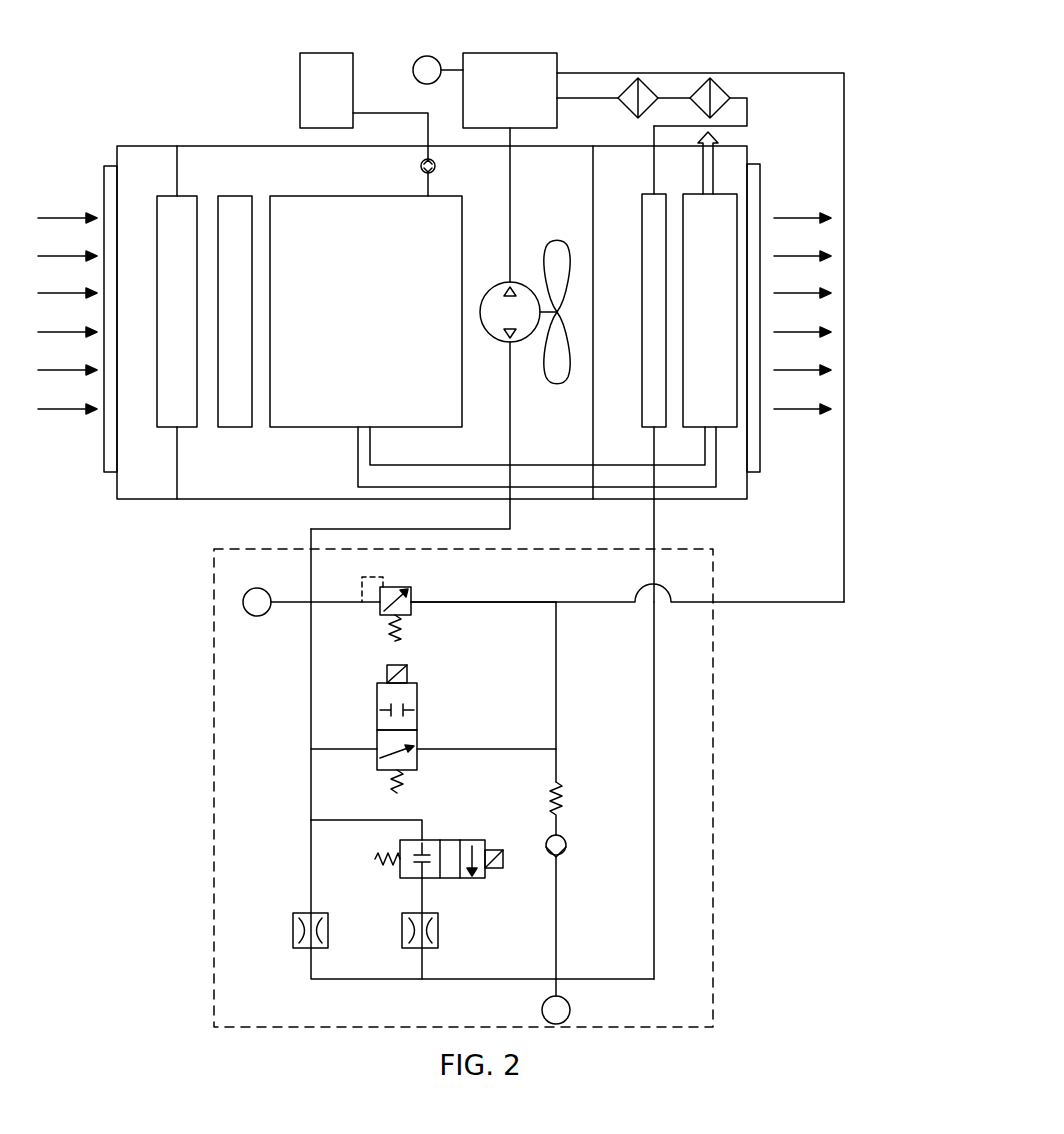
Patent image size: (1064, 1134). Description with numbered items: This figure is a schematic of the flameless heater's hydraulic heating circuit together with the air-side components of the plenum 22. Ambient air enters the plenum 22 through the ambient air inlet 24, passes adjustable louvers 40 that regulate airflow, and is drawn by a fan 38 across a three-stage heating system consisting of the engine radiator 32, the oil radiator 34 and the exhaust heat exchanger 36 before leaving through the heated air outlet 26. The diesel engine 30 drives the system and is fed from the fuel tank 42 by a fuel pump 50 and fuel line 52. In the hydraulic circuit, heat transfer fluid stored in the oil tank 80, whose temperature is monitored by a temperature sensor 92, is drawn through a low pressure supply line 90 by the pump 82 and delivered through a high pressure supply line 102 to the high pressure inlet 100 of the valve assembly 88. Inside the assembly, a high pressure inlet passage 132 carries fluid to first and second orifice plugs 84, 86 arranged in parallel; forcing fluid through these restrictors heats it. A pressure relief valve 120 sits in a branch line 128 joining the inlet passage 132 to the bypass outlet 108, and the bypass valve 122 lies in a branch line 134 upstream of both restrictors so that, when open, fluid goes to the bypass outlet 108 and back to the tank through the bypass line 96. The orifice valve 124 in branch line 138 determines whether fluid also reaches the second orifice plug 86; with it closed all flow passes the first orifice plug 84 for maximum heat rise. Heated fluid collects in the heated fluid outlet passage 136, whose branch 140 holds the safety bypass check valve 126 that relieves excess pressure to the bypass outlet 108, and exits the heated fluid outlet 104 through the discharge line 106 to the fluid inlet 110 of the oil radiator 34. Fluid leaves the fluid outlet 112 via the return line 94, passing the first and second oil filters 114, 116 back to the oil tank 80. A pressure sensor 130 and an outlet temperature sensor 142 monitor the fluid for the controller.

The plenum 22 is at (117, 146).
The ambient air inlet 24 is at (104, 193).
The heated air outlet 26 is at (760, 193).
The diesel engine 30 is at (359, 329).
The engine radiator 32 is at (235, 428).
The oil radiator 34 is at (642, 277).
The exhaust heat exchanger 36 is at (728, 194).
The fan 38 is at (558, 380).
The louvers 40 is at (185, 428).
The fuel tank 42 is at (305, 52).
The fuel pump 50 is at (420, 166).
The fuel line 52 is at (388, 113).
The oil tank 80 is at (477, 52).
The pump 82 is at (500, 288).
The first orifice plug 84 is at (293, 925).
The second orifice plug 86 is at (402, 925).
The valve assembly 88 is at (713, 917).
The low pressure supply line 90 is at (510, 186).
The temperature sensor 92 is at (430, 55).
The return line 94 is at (571, 100).
The bypass line 96 is at (844, 92).
The high pressure inlet 100 is at (311, 549).
The high pressure supply line 102 is at (388, 529).
The heated fluid outlet 104 is at (656, 548).
The discharge line 106 is at (654, 548).
The bypass outlet 108 is at (713, 604).
The fluid inlet 110 is at (653, 437).
The fluid outlet 112 is at (654, 190).
The first oil filter 114 is at (655, 90).
The second oil filter 116 is at (722, 90).
The pressure relief valve 120 is at (415, 608).
The bypass valve 122 is at (420, 758).
The orifice valve 124 is at (452, 880).
The safety bypass check valve 126 is at (560, 856).
The branch line 128 is at (337, 601).
The pressure sensor 130 is at (246, 593).
The high pressure inlet passage 132 is at (311, 731).
The branch line 134 is at (337, 748).
The heated fluid outlet passage 136 is at (447, 981).
The branch line 138 is at (337, 819).
The branch 140 is at (558, 958).
The temperature sensor 142 is at (542, 1012).